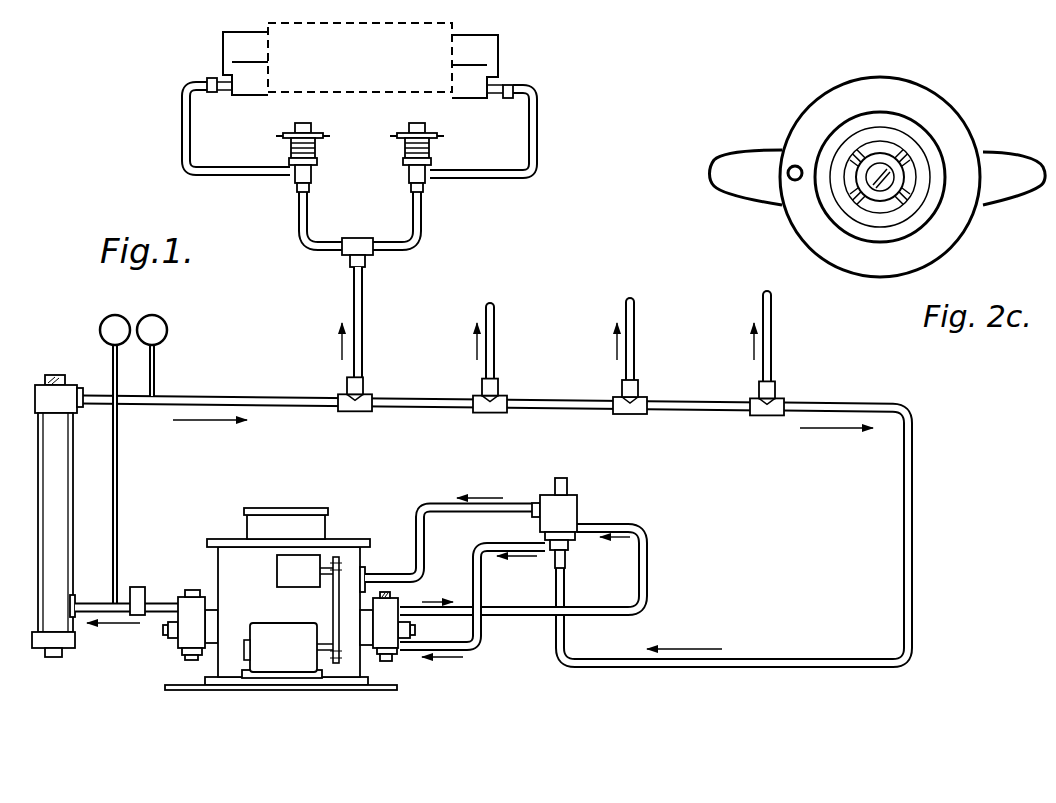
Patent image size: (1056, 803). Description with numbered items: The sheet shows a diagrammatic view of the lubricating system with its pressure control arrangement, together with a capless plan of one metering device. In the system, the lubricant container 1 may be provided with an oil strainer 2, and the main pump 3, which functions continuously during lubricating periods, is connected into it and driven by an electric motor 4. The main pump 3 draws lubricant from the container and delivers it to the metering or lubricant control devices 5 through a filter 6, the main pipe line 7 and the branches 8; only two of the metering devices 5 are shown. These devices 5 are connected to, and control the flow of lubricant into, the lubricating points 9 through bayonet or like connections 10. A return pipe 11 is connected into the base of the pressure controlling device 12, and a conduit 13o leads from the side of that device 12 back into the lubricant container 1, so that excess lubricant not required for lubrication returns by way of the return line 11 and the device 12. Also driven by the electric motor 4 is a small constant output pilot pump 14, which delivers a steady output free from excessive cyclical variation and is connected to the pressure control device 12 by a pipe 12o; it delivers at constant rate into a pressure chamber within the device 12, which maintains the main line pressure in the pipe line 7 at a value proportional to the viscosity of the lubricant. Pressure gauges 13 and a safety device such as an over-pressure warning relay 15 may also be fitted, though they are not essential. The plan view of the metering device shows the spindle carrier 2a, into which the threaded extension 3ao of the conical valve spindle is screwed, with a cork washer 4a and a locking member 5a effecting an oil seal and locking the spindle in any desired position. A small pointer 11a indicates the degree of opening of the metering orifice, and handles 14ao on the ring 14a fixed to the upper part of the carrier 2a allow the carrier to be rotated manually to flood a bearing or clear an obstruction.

In FIG. 1, the lubricant container 1 is at (220, 568).
In FIG. 1, the oil strainer 2 is at (292, 520).
In FIG. 1, the main pump 3 is at (190, 633).
In FIG. 1, the electric motor 4 is at (285, 632).
In FIG. 1, the metering or lubricant control devices 5 is at (413, 125).
In FIG. 1, the filter 6 is at (65, 463).
In FIG. 1, the main pipe line 7 is at (287, 388).
In FIG. 1, the branches 8 is at (488, 308).
In FIG. 1, the lubricating points 9 is at (245, 85).
In FIG. 1, the bayonet or like connections 10 is at (208, 80).
In FIG. 1, the return pipe 11 is at (838, 660).
In FIG. 1, the pressure controlling device 12 is at (567, 507).
In FIG. 1, the pipe 12o is at (605, 610).
In FIG. 1, the pressure gauges 13 is at (148, 320).
In FIG. 1, the conduit 13o is at (517, 505).
In FIG. 1, the pilot pump 14 is at (388, 640).
In FIG. 1, the over-pressure warning relay 15 is at (140, 587).
In FIG. 2C, the ring 14a is at (912, 70).
In FIG. 2C, the handles 14ao is at (765, 188).
In FIG. 2C, the spindle carrier 2a is at (933, 148).
In FIG. 2C, the pointer 11a is at (835, 158).
In FIG. 2C, the cork washer 4a is at (903, 203).
In FIG. 2C, the threaded extension 3ao is at (870, 182).
In FIG. 2C, the locking member 5a is at (882, 208).